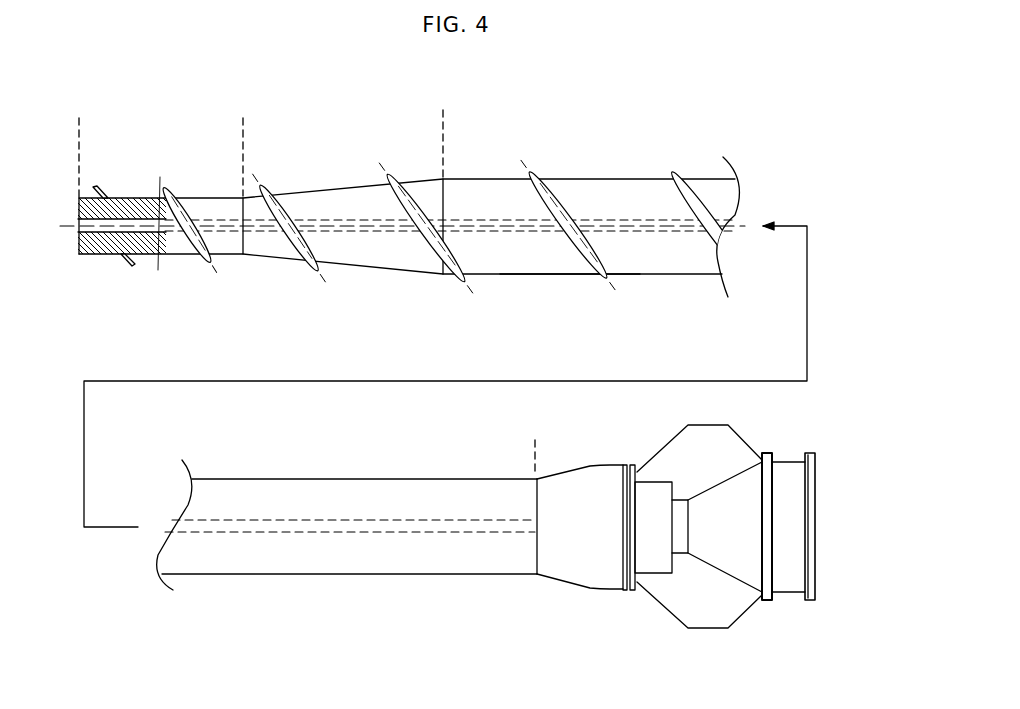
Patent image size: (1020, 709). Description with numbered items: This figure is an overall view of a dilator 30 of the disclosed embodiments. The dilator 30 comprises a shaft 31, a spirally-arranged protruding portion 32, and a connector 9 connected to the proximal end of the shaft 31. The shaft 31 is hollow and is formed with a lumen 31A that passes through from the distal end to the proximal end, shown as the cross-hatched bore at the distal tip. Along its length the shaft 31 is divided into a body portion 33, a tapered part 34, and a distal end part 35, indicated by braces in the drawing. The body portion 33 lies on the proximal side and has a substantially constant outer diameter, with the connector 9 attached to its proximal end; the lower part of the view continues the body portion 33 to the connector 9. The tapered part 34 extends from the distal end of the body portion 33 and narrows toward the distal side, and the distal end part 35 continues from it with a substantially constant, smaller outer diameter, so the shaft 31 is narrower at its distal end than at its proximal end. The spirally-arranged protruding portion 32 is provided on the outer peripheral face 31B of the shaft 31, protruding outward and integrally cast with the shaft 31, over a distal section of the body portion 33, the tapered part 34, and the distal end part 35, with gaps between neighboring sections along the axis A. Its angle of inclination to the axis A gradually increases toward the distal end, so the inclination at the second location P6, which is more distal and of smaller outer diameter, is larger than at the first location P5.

The dilator 30 is at (435, 208).
The shaft 31 is at (708, 156).
The lumen 31A is at (110, 228).
The outer peripheral face 31B is at (567, 276).
The spirally-arranged protruding portion 32 is at (535, 171).
The body portion 33 is at (732, 113).
The tapered part 34 is at (243, 113).
The distal end part 35 is at (243, 113).
The connector 9 is at (664, 636).
The axis A is at (64, 232).
The first location P5 is at (425, 166).
The second location P6 is at (286, 182).